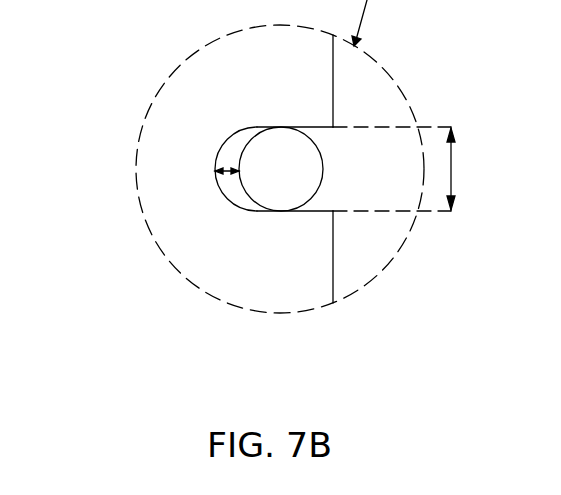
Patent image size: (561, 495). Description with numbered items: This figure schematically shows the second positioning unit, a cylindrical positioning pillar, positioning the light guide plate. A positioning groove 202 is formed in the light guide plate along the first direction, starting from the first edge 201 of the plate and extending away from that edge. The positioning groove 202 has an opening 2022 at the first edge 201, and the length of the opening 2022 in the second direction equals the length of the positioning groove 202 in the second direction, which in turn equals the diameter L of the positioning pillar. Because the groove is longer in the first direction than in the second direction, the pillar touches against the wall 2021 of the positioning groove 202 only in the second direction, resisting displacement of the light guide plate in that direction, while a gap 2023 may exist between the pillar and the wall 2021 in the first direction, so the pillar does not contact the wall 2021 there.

The first edge 201 is at (334, 245).
The positioning groove 202 is at (232, 157).
The wall 2021 is at (258, 209).
The opening 2022 is at (325, 137).
The gap 2023 is at (217, 174).
The diameter L is at (461, 169).